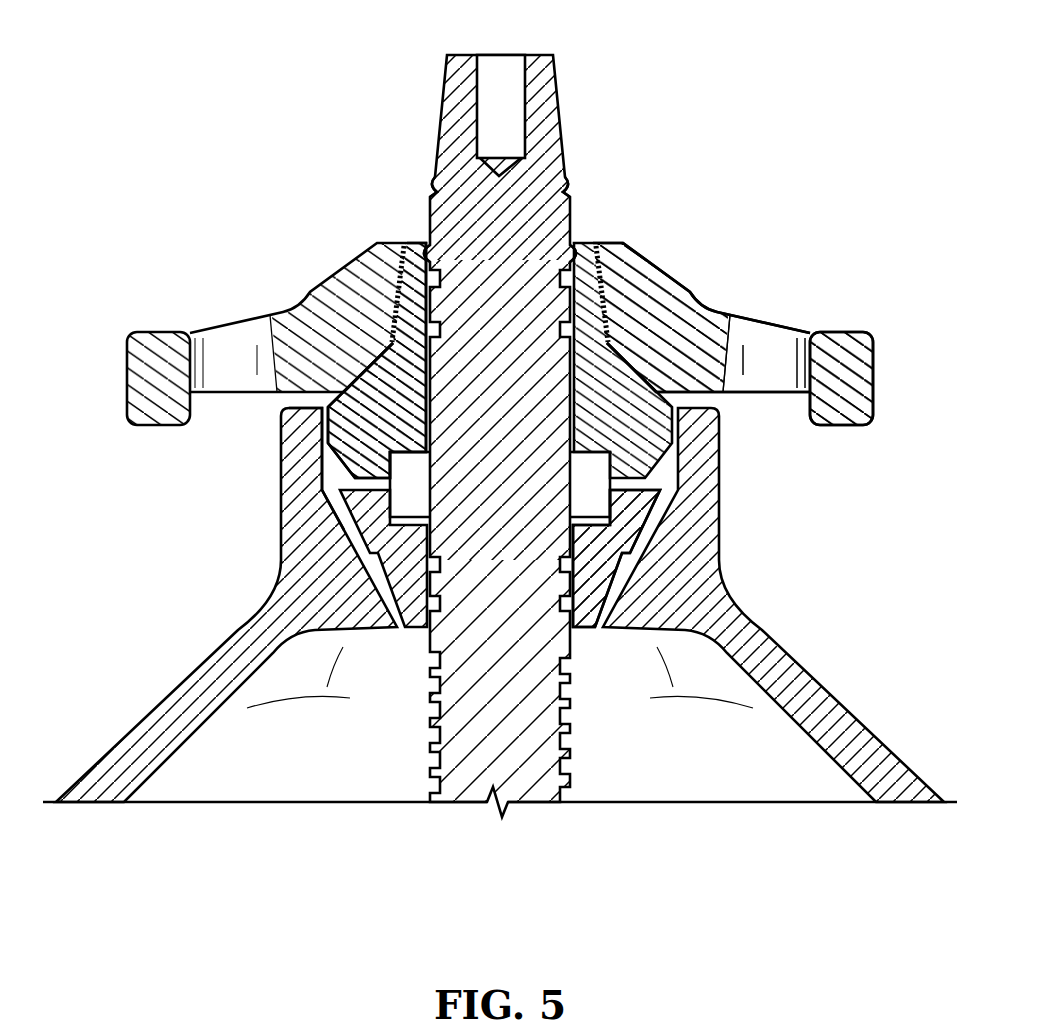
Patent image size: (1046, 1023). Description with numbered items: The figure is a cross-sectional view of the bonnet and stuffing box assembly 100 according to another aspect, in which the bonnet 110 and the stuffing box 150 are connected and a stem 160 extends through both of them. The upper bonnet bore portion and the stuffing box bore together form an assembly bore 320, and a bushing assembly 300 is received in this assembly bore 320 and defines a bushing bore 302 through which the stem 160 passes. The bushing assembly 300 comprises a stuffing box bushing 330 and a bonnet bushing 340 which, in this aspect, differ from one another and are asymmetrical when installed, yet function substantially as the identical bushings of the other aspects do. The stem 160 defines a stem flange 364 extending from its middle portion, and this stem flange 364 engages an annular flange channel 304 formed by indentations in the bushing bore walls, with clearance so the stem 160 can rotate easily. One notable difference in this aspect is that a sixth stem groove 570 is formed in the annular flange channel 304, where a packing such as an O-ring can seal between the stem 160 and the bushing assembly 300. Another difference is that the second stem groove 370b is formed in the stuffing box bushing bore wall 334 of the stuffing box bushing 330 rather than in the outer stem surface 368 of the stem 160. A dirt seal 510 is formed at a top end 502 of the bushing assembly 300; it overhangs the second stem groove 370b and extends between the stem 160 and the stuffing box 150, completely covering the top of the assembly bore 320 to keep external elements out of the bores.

The bonnet and stuffing box assembly 100 is at (500, 434).
The bonnet 110 is at (865, 723).
The stuffing box 150 is at (643, 273).
The stem 160 is at (431, 238).
The bushing assembly 300 is at (310, 292).
The bushing bore 302 is at (727, 317).
The annular flange channel 304 is at (613, 517).
The assembly bore 320 is at (330, 483).
The stuffing box bushing 330 is at (587, 347).
The stuffing box bushing bore wall 334 is at (512, 258).
The bonnet bushing 340 is at (620, 565).
The stem flange 364 is at (390, 480).
The outer stem surface 368 is at (370, 246).
The second stem groove 370b is at (580, 232).
The top end 502 is at (395, 243).
The dirt seal 510 is at (581, 238).
The sixth stem groove 570 is at (613, 483).